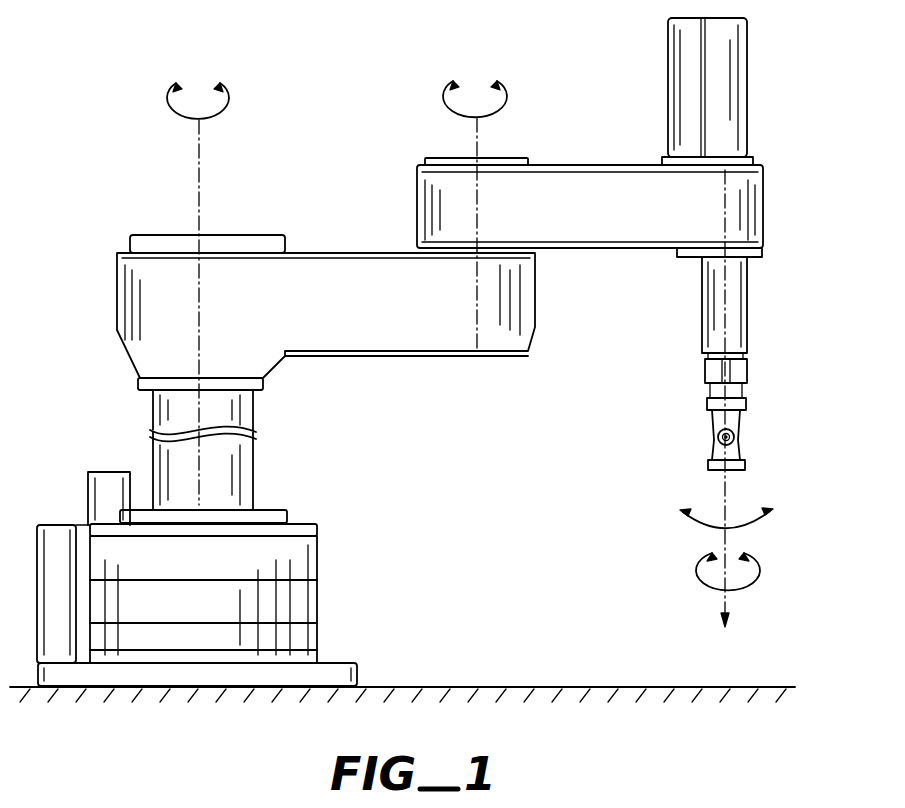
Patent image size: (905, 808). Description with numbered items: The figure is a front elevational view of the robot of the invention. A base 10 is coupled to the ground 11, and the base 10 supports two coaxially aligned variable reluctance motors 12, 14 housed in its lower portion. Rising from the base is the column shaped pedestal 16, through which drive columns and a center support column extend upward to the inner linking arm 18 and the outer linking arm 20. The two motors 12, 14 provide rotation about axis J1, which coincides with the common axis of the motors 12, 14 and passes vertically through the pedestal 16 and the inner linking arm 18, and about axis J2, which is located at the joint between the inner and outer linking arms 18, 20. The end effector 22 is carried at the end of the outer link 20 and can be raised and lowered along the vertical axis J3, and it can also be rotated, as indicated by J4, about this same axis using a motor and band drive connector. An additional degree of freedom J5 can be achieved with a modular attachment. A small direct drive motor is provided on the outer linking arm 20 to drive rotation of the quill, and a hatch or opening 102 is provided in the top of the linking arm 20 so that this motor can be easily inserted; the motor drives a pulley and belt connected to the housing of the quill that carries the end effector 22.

The base 10 is at (360, 673).
The ground 11 is at (236, 695).
The variable reluctance motor 12 is at (302, 633).
The variable reluctance motor 14 is at (302, 553).
The column shaped pedestal 16 is at (286, 447).
The inner linking arm 18 is at (393, 332).
The outer linking arm 20 is at (588, 222).
The end effector 22 is at (693, 417).
The hatch or opening 102 is at (433, 158).
The axis J1 is at (198, 294).
The axis J2 is at (475, 215).
The axis J3 is at (726, 415).
The rotation J4 is at (711, 571).
The additional degree of freedom J5 is at (712, 515).